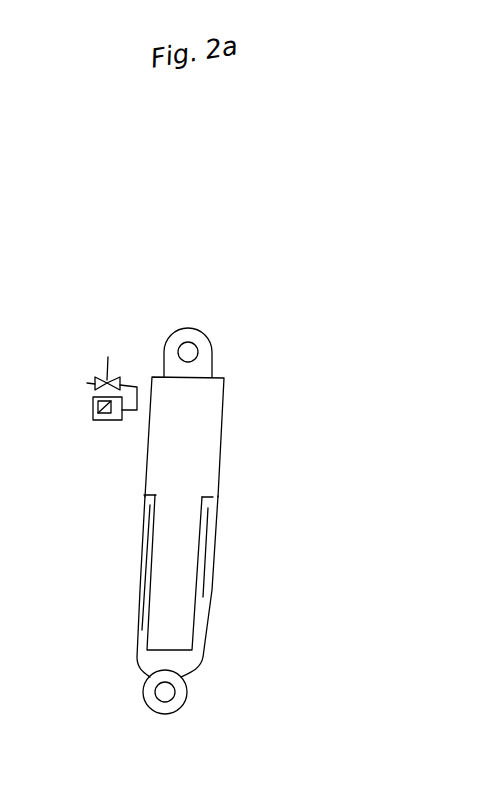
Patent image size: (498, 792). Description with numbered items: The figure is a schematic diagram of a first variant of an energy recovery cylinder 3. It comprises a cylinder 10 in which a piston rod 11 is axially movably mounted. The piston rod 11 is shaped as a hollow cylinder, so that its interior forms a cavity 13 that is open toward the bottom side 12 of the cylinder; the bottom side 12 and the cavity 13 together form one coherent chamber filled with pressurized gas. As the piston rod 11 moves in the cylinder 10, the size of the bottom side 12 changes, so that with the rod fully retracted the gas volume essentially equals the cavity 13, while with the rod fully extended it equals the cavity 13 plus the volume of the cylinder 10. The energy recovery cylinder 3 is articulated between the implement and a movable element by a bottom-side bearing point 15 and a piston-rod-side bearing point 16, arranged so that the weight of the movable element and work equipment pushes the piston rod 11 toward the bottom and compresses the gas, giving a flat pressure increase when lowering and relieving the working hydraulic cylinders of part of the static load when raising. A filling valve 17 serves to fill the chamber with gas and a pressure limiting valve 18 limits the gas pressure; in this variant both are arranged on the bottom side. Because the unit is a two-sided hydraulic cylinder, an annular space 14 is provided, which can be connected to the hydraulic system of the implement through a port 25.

The energy recovery cylinder 3 is at (316, 371).
The cylinder 10 is at (222, 436).
The piston rod 11 is at (140, 627).
The bottom side 12 is at (175, 425).
The cavity 13 is at (173, 554).
The annular space 14 is at (210, 553).
The bottom-side bearing point 15 is at (186, 343).
The piston-rod-side bearing point 16 is at (162, 700).
The filling valve 17 is at (104, 374).
The pressure limiting valve 18 is at (93, 408).
The port 25 is at (136, 583).